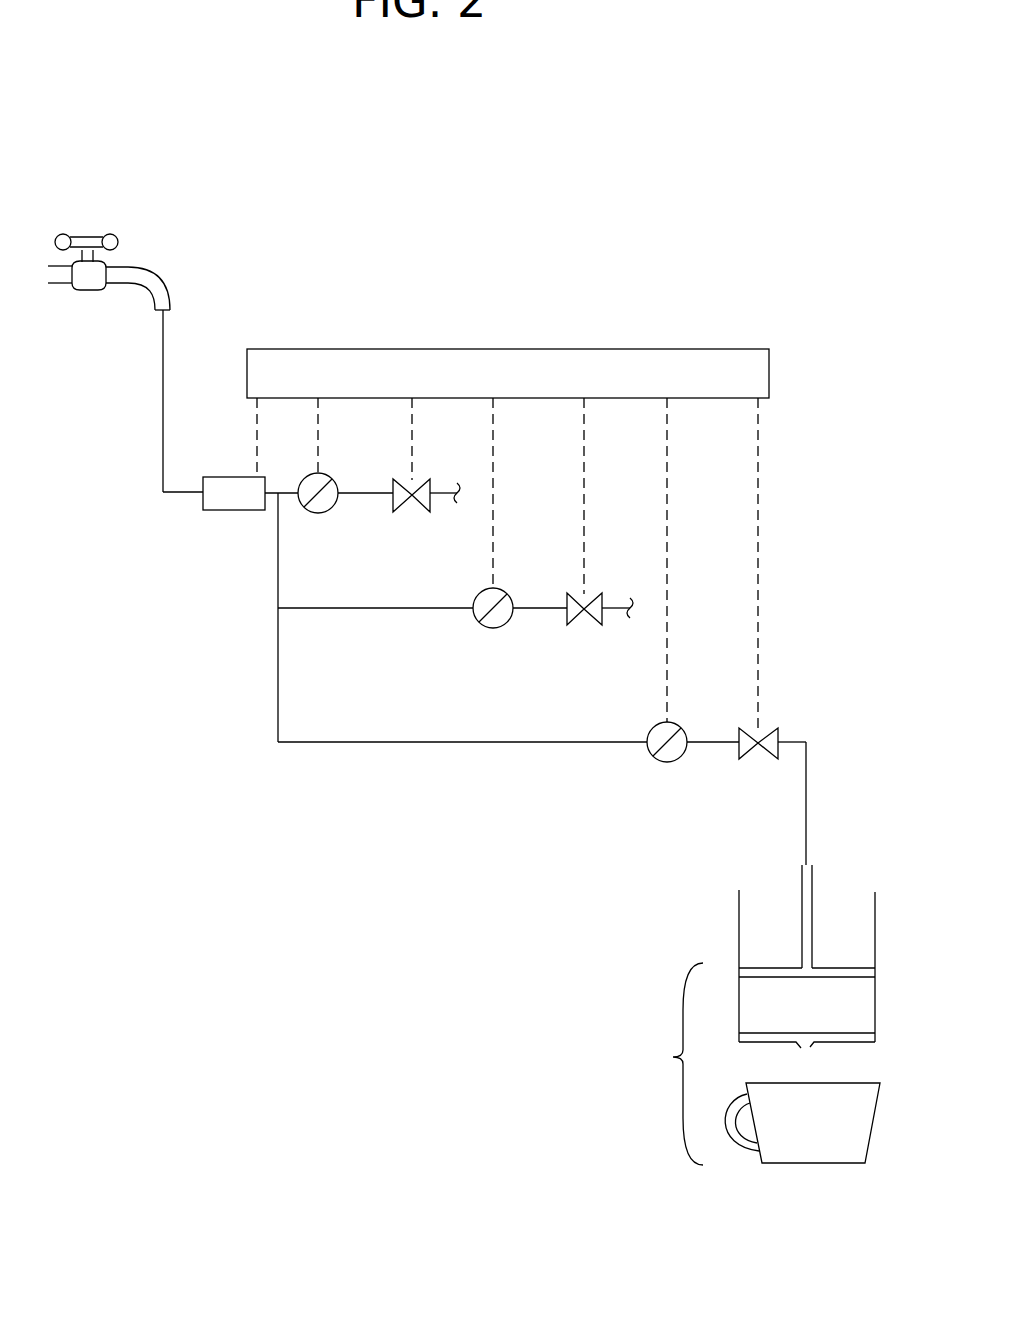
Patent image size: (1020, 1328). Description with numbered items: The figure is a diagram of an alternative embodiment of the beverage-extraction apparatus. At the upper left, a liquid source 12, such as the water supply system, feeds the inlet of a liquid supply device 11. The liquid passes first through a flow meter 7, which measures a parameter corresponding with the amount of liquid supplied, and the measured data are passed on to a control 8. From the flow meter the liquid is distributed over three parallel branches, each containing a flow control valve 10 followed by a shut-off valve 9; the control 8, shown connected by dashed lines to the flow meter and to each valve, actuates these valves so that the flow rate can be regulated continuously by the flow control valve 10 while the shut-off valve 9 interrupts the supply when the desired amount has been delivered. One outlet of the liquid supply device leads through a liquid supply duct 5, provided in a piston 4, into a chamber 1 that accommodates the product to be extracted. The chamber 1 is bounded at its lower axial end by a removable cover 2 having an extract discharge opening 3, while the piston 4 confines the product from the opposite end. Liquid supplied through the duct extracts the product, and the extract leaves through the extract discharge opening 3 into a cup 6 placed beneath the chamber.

The chamber 1 is at (739, 1010).
The removable cover 2 is at (739, 1035).
The extract discharge opening 3 is at (816, 1047).
The piston 4 is at (739, 970).
The liquid supply duct 5 is at (810, 883).
The cup 6 is at (785, 1153).
The flow meter 7 is at (248, 492).
The control 8 is at (563, 355).
The shut-off valve 9 is at (418, 505).
The flow control valve 10 is at (332, 507).
The liquid supply device 11 is at (114, 484).
The liquid source 12 is at (150, 280).